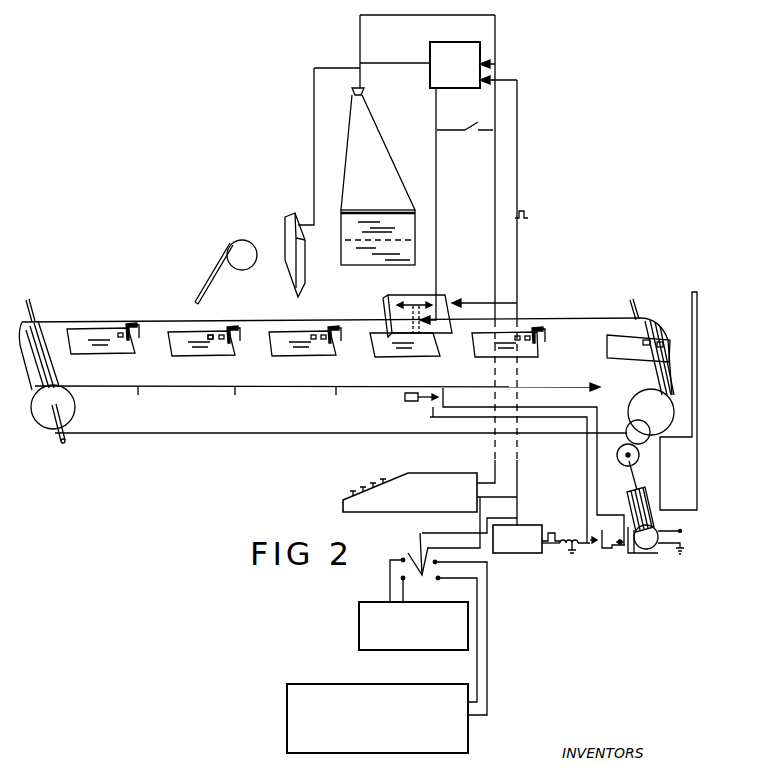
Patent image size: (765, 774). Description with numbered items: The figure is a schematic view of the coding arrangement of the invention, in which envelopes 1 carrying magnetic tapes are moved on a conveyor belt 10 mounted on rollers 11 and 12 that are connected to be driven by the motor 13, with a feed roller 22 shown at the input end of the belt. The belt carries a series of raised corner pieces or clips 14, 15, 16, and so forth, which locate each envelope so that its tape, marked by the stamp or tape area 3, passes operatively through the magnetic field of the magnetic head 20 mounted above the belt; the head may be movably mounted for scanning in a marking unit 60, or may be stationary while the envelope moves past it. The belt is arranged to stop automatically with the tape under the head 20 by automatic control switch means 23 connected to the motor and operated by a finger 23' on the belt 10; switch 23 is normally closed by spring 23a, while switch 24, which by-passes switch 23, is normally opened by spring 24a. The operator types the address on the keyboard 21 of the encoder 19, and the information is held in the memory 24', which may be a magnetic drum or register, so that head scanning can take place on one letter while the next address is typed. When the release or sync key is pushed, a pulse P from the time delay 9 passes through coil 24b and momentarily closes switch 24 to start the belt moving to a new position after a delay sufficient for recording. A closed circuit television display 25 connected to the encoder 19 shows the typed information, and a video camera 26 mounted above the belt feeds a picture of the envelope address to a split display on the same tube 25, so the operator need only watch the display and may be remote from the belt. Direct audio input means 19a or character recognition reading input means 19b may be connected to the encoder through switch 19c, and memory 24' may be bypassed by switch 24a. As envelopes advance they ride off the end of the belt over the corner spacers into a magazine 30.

The envelope 1 is at (208, 352).
The stamp on envelope 3 is at (212, 330).
The time delay 9 is at (517, 553).
The conveyor belt 10 is at (283, 386).
The roller 11 is at (76, 410).
The roller 12 is at (640, 392).
The motor 13 is at (633, 490).
The corner piece or clip 14 is at (116, 338).
The corner piece or clip 15 is at (218, 339).
The corner piece or clip 16 is at (337, 336).
The encoder 19 is at (431, 478).
The direct audio input means 19a is at (359, 625).
The character recognition reading input means 19b is at (287, 712).
The switch 19c is at (410, 556).
The magnetic head 20 is at (425, 336).
The keyboard 21 is at (378, 485).
The feed roller 22 is at (262, 272).
The automatic control switch means 23 is at (490, 472).
The finger 23' is at (533, 456).
The spring 23a is at (401, 402).
The switch 24 is at (605, 557).
The memory 24' is at (421, 169).
The spring 24a is at (622, 547).
The coil 24b is at (558, 560).
The closed circuit television display 25 is at (357, 265).
The video camera 26 is at (305, 275).
The magazine 30 is at (678, 401).
The marking unit 60 is at (390, 295).
The pulse P is at (557, 530).